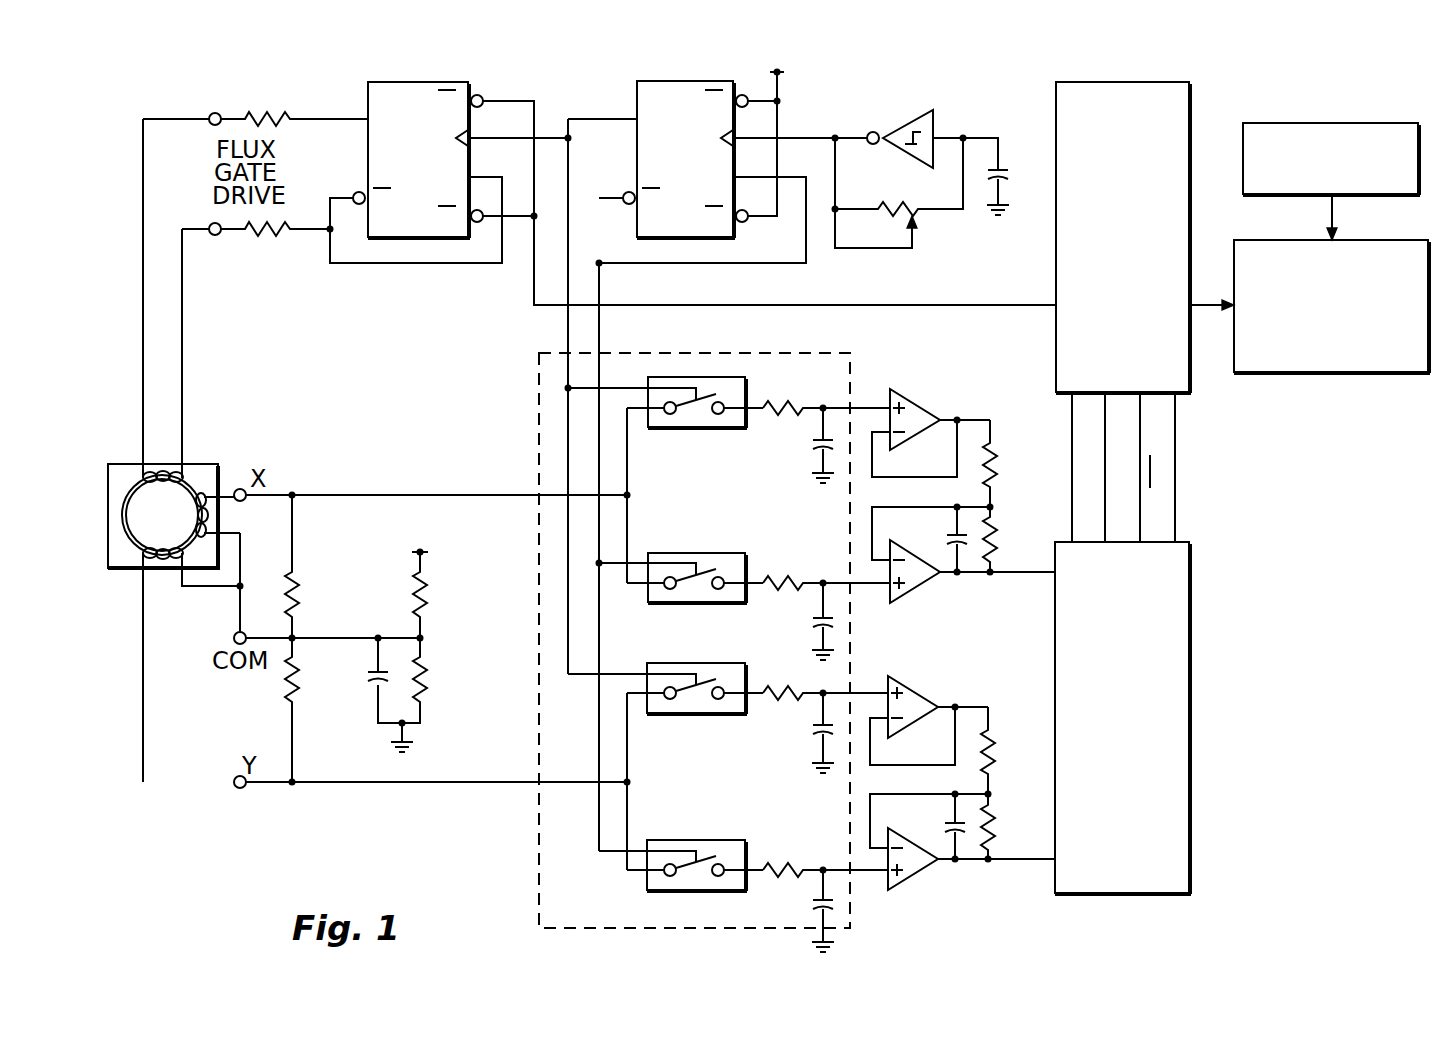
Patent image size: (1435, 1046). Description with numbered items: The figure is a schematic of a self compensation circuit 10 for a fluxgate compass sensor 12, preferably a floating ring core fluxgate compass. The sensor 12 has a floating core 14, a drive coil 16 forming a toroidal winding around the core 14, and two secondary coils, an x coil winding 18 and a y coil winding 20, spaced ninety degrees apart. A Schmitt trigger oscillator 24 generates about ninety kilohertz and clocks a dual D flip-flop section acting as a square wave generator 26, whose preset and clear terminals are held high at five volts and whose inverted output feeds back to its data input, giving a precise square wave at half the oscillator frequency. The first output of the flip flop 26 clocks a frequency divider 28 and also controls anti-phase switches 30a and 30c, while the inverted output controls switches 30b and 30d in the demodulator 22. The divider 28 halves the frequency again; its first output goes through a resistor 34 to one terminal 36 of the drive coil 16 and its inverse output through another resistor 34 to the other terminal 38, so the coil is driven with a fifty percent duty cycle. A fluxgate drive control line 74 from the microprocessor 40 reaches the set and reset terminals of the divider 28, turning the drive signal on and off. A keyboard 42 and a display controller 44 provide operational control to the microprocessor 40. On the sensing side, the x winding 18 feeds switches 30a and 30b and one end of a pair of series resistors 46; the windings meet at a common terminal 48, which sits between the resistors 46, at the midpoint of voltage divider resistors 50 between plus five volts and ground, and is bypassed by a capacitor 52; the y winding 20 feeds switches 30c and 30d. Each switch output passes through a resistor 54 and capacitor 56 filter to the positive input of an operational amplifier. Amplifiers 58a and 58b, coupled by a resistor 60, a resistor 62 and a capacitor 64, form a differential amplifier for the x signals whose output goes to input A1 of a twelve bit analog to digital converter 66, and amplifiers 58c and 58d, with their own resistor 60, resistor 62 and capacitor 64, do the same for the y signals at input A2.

The self compensation circuit 10 is at (276, 866).
The fluxgate compass sensor 12 is at (202, 464).
The floating core 14 is at (125, 490).
The drive coil 16 is at (168, 474).
The x coil winding 18 is at (208, 512).
The y coil winding 20 is at (160, 556).
The demodulator 22 is at (538, 404).
The Schmitt trigger oscillator 24 is at (937, 110).
The square wave generator flip flop 26 is at (686, 81).
The frequency divider 28 is at (428, 82).
The demodulator anti-phase switch 30a is at (696, 428).
The demodulator anti-phase switch 30b is at (692, 553).
The demodulator anti-phase switch 30c is at (696, 714).
The demodulator anti-phase switch 30d is at (692, 840).
The resistor 34 is at (266, 112).
The drive coil terminal 36 is at (211, 112).
The drive coil terminal 38 is at (213, 236).
The microprocessor 40 is at (1151, 82).
The keyboard 42 is at (1373, 123).
The display controller 44 is at (1381, 240).
The series connected resistors 46 is at (298, 584).
The common terminal 48 is at (234, 636).
The voltage divider resistors 50 is at (426, 584).
The capacitor 52 is at (370, 680).
The resistor 54 is at (780, 401).
The capacitor 56 is at (814, 446).
The operational amplifier 58a is at (905, 400).
The operational amplifier 58b is at (905, 598).
The operational amplifier 58c is at (903, 686).
The operational amplifier 58d is at (903, 888).
The resistor 60 is at (996, 458).
The resistor 62 is at (996, 533).
The capacitor 64 is at (948, 536).
The analog to digital converter 66 is at (1189, 620).
The fluxgate drive control line 74 is at (530, 296).